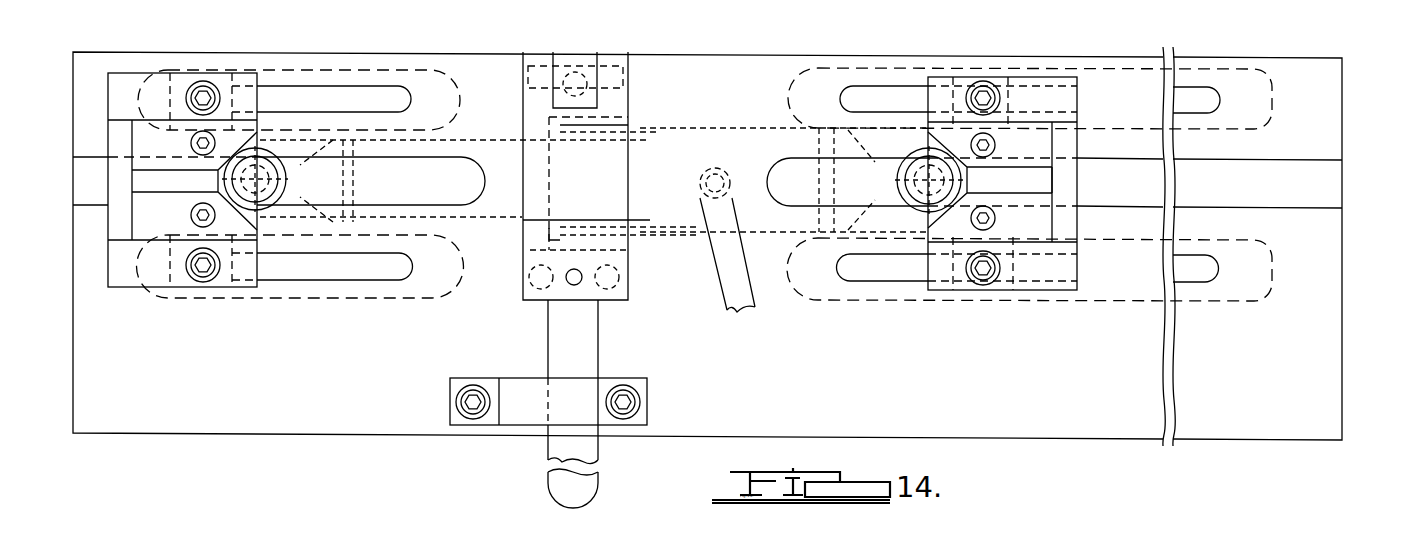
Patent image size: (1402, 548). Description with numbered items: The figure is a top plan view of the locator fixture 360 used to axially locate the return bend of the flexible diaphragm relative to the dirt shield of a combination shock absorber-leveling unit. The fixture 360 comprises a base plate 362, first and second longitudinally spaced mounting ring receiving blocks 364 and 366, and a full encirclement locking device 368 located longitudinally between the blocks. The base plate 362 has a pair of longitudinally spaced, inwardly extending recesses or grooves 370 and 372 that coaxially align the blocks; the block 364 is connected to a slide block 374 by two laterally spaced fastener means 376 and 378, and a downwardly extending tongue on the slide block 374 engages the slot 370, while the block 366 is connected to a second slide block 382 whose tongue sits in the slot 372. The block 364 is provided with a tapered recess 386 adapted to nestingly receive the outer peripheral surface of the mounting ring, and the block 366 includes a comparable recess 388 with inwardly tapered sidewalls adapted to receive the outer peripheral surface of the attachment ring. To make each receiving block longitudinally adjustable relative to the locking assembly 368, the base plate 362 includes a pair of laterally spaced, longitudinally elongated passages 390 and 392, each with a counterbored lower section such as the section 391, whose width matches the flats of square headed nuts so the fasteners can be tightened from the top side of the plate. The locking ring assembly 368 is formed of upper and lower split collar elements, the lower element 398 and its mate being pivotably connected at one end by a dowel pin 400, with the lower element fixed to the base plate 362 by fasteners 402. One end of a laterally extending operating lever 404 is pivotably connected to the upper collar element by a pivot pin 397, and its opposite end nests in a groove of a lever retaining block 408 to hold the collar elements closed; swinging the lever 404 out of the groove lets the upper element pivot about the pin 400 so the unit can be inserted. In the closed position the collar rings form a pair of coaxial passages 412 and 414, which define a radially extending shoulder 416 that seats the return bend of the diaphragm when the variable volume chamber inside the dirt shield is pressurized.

The locator fixture 360 is at (1066, 447).
The base plate 362 is at (1300, 432).
The first mounting ring receiving block 364 is at (176, 229).
The second mounting ring receiving block 366 is at (1072, 185).
The full encirclement locking device 368 is at (596, 201).
The groove 370 is at (428, 198).
The groove 372 is at (1293, 165).
The slide block 374 is at (187, 187).
The fastener means 376 is at (208, 135).
The fastener means 378 is at (198, 222).
The second slide block 382 is at (1040, 292).
The pivot pin 386 is at (266, 182).
The recess 388 is at (928, 180).
The longitudinally elongated passage 390 is at (1195, 100).
The counterbored lower section 391 is at (1263, 80).
The longitudinally elongated passage 392 is at (1195, 270).
The pivot pin 397 is at (572, 285).
The lower split collar element 398 is at (636, 140).
The dowel pin 400 is at (612, 67).
The fasteners 402 is at (530, 284).
The operating lever 404 is at (600, 334).
The lever retaining block 408 is at (650, 385).
The coaxial passage 412 is at (540, 140).
The coaxial passage 414 is at (588, 126).
The radially extending shoulder 416 is at (555, 220).